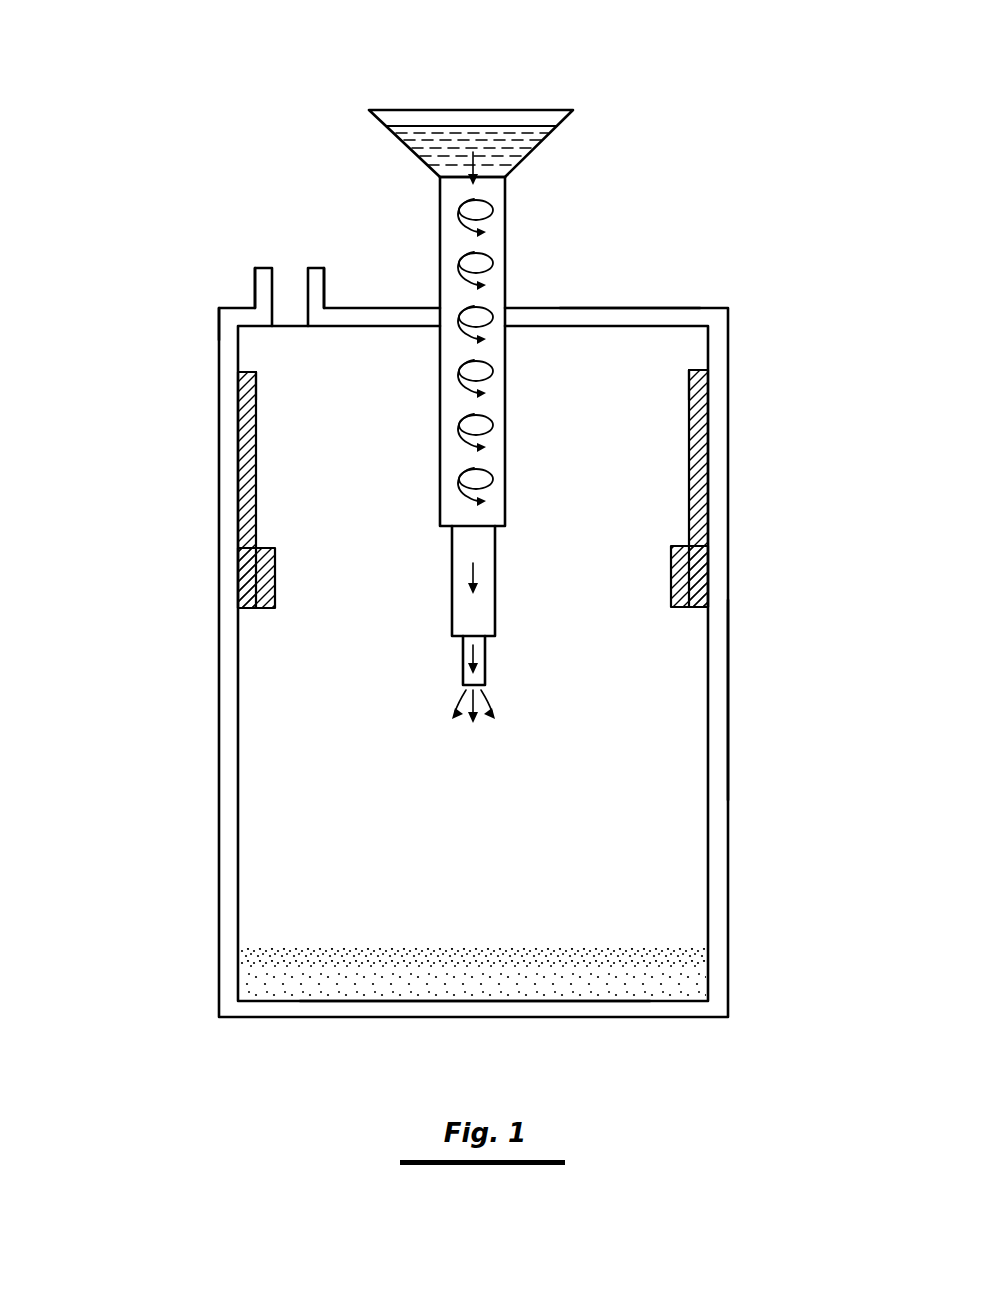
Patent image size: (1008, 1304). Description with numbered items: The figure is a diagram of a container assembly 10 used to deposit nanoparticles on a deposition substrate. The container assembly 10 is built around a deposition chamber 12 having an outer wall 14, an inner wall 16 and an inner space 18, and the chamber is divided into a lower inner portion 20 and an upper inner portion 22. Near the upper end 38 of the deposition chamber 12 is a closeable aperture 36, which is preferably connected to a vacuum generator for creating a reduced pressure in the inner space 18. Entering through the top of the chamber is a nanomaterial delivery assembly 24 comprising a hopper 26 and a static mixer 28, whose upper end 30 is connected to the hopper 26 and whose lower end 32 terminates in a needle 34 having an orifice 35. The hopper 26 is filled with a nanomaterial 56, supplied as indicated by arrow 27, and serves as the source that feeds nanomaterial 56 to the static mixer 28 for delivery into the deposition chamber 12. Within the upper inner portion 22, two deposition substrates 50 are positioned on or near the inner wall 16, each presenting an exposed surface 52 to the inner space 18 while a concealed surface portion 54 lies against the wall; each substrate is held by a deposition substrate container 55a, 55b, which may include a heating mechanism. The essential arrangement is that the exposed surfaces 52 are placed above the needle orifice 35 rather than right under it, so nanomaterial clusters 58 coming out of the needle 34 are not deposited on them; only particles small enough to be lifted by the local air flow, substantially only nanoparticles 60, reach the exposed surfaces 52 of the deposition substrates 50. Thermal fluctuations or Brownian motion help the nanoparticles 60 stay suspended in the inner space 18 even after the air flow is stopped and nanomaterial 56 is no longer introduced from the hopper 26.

The container assembly 10 is at (97, 404).
The deposition chamber 12 is at (728, 326).
The outer wall 14 is at (729, 675).
The inner wall 16 is at (708, 797).
The inner space 18 is at (320, 728).
The lower inner portion 20 is at (667, 902).
The upper inner portion 22 is at (630, 273).
The nanomaterial delivery assembly 24 is at (565, 245).
The hopper 26 is at (386, 128).
The liquid inflow 27 is at (430, 98).
The static mixer 28 is at (440, 237).
The upper end 30 is at (505, 178).
The lower end 32 is at (495, 638).
The needle 34 is at (462, 662).
The orifice 35 is at (470, 700).
The closeable aperture 36 is at (254, 270).
The upper end 38 is at (220, 305).
The deposition substrate 50 is at (238, 472).
The exposed surface 52 is at (257, 405).
The concealed surface portion 54 is at (250, 525).
The deposition substrate container 55a is at (265, 610).
The deposition substrate container 55b is at (680, 608).
The nanomaterial 56 is at (472, 137).
The nanomaterial clusters 58 is at (297, 947).
The nanoparticles 60 is at (652, 428).